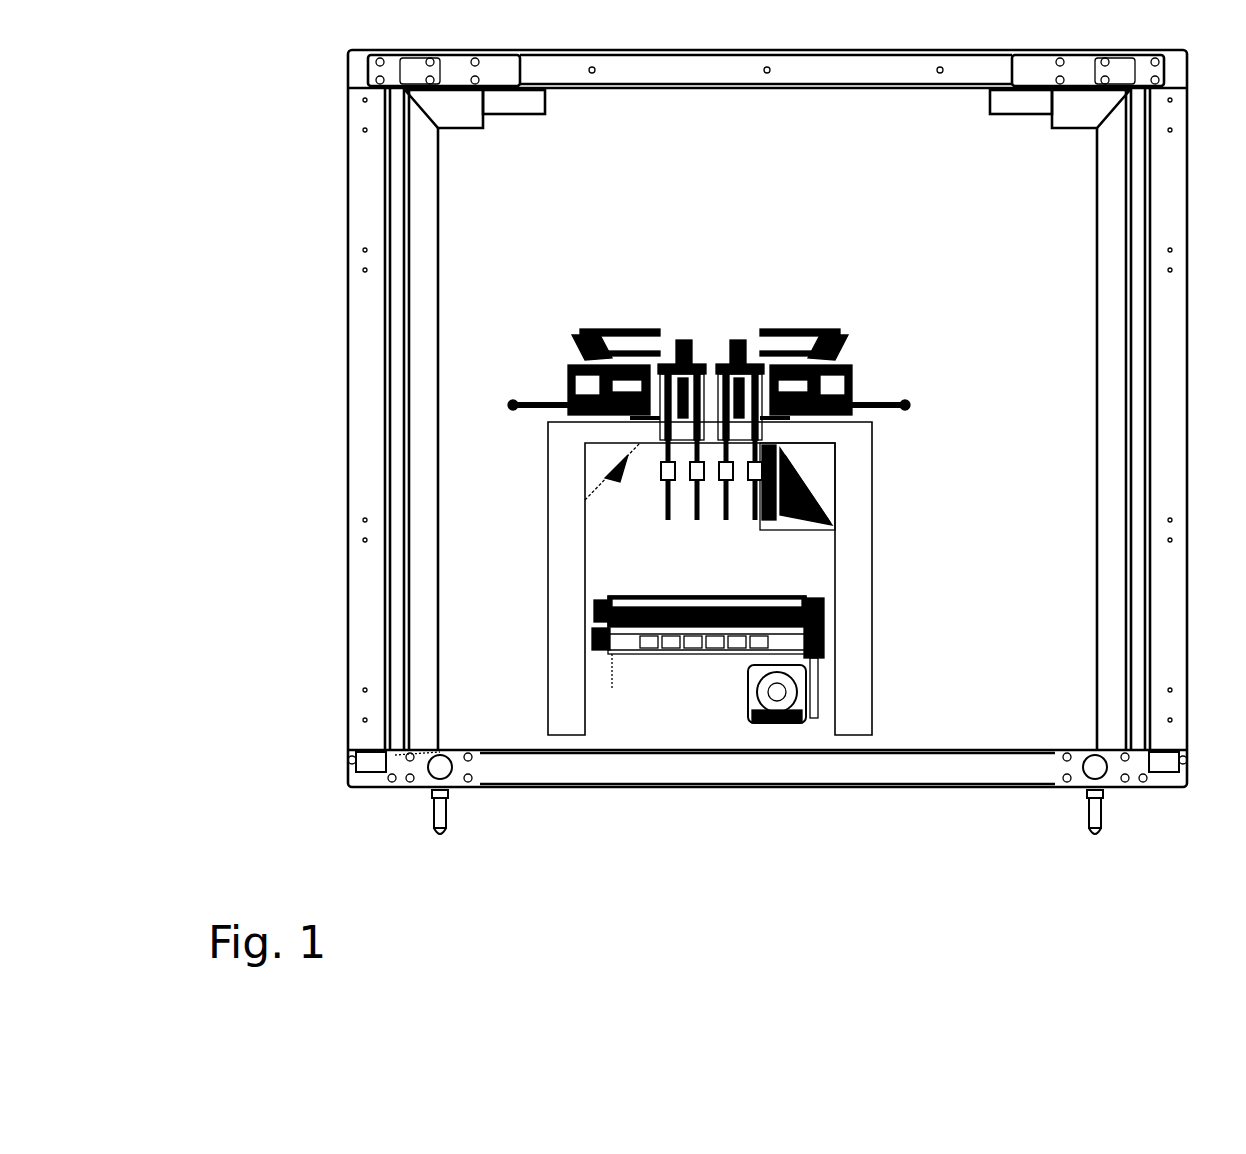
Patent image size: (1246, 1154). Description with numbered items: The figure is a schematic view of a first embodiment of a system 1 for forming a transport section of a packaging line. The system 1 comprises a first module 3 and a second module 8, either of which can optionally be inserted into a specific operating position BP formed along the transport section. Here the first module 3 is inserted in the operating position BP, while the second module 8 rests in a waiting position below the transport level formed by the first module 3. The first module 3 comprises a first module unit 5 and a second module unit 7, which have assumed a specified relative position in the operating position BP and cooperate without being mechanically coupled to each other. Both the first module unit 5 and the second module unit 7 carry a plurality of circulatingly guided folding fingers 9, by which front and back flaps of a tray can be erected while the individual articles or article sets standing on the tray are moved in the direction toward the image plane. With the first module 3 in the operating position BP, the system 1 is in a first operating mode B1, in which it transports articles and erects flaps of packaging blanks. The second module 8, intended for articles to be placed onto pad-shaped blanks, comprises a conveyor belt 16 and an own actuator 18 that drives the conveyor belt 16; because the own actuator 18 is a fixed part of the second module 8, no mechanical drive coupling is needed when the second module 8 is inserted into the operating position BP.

The system 1 is at (962, 858).
The first module 3 is at (703, 268).
The first module unit 5 is at (626, 290).
The second module unit 7 is at (858, 308).
The second module 8 is at (700, 710).
The folding fingers 9 is at (686, 338).
The conveyor belt 16 is at (605, 600).
The own actuator 18 is at (785, 724).
The operating position BP is at (725, 215).
The first operating mode B1 is at (1032, 196).